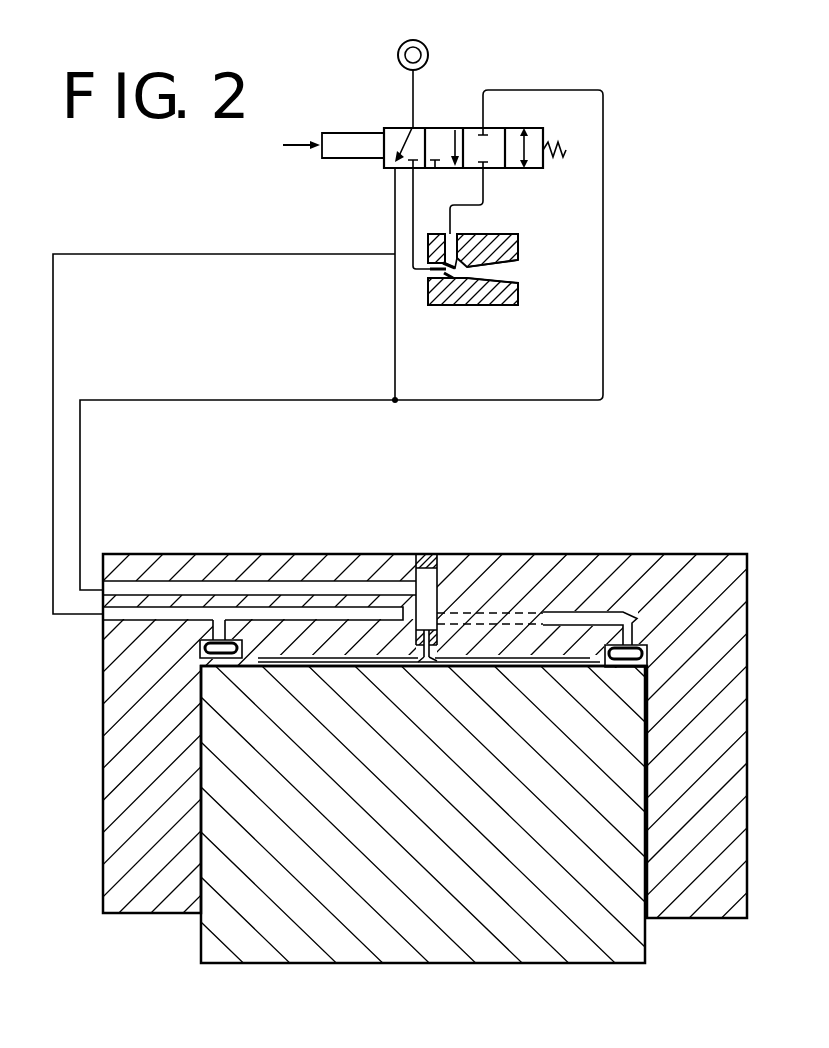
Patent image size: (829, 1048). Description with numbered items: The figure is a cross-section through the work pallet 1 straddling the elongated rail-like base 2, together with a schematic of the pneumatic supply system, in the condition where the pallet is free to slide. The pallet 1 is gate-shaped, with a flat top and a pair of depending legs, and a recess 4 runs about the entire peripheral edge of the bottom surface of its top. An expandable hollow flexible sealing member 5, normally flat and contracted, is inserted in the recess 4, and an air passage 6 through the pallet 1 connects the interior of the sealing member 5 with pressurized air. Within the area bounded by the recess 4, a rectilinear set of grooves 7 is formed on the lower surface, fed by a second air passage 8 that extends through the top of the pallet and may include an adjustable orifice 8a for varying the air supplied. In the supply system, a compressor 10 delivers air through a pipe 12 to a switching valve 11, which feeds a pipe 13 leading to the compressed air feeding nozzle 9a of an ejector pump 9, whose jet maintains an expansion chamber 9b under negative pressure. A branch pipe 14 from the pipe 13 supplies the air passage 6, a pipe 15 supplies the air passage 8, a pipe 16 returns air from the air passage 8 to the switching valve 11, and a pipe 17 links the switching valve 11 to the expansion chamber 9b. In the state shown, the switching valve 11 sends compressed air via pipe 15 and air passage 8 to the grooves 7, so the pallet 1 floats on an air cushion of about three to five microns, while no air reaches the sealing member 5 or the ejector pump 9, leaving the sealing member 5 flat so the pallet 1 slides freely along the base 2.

The work pallet 1 is at (532, 556).
The base 2 is at (617, 933).
The recess 4 is at (250, 645).
The sealing member 5 is at (203, 672).
The air passage 6 is at (622, 610).
The grooves 7 is at (356, 663).
The second air passage 8 is at (322, 588).
The adjustable orifice 8a is at (459, 633).
The ejector pump 9 is at (518, 230).
The compressed air feeding nozzle 9a is at (450, 276).
The expansion chamber 9b is at (468, 278).
The compressor 10 is at (400, 46).
The switching valve 11 is at (446, 128).
The pipe 12 is at (410, 86).
The pipe 13 is at (428, 271).
The branch pipe 14 is at (222, 254).
The pipe 15 is at (395, 292).
The pipe 16 is at (603, 278).
The pipe 17 is at (483, 185).